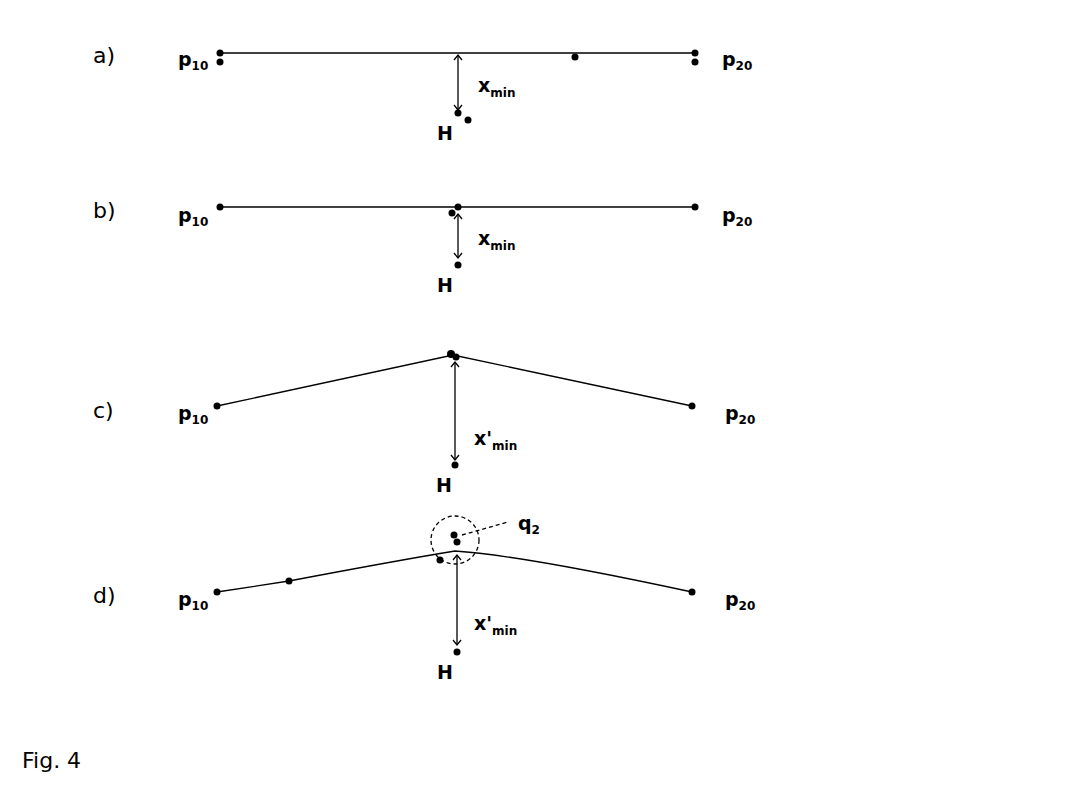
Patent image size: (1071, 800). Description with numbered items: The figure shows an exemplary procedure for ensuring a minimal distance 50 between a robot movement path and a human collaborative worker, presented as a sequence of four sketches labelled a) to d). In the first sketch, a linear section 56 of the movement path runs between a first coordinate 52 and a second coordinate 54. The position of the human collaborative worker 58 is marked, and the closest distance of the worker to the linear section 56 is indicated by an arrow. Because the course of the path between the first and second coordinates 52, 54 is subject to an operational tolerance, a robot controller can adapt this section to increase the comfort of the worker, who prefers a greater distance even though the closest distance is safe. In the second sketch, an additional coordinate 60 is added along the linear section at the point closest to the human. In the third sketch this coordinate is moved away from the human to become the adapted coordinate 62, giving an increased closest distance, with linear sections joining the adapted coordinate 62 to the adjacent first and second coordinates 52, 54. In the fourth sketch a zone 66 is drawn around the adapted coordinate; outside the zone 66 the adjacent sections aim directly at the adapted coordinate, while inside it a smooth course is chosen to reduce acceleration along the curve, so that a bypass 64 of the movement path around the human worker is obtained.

The procedure for ensuring a minimal distance 50 is at (805, 717).
The first coordinate P10 52 is at (220, 70).
The second coordinate P20 54 is at (695, 70).
The linear section of the movement path 56 is at (575, 64).
The coordinate of the human collaborative worker H 58 is at (473, 125).
The additional coordinate q1 60 is at (446, 216).
The adapted coordinate q2 62 is at (446, 352).
The bypass of the movement path 64 is at (286, 588).
The zone around the coordinate q2 66 is at (435, 565).